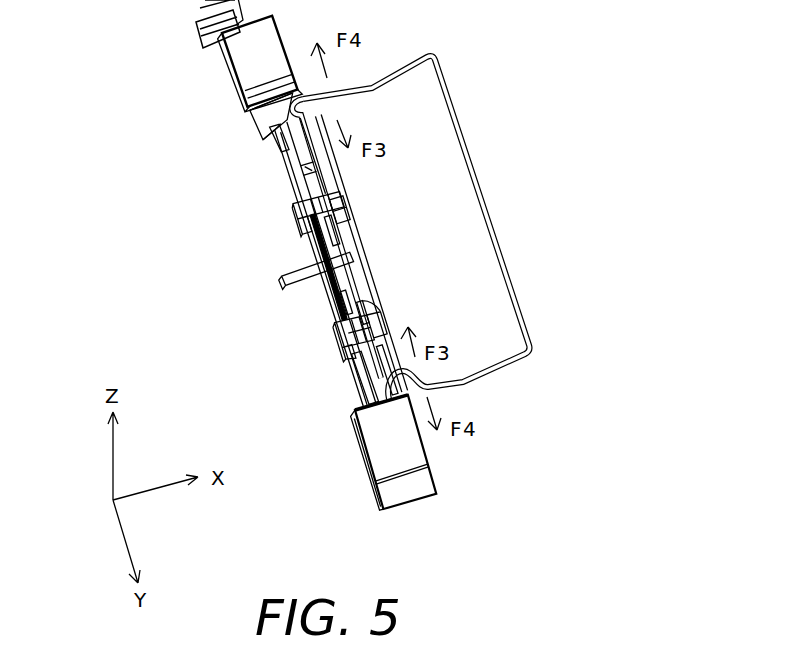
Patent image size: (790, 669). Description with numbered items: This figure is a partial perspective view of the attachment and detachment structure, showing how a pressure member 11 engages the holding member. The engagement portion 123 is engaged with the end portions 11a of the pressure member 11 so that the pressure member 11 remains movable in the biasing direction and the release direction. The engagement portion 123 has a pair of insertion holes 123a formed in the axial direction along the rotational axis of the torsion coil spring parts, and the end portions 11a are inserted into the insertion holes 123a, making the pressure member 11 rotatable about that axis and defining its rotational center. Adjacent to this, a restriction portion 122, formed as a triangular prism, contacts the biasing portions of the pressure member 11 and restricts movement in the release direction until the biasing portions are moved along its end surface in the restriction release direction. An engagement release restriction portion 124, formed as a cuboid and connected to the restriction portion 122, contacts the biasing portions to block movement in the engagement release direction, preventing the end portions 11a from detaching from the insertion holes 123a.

The pressure member 11 is at (478, 176).
The end portion of the pressure member 11a is at (370, 242).
The restriction portion 122 is at (266, 130).
The engagement portion 123 is at (333, 213).
The insertion hole 123a is at (360, 216).
The engagement release restriction portion 124 is at (232, 74).